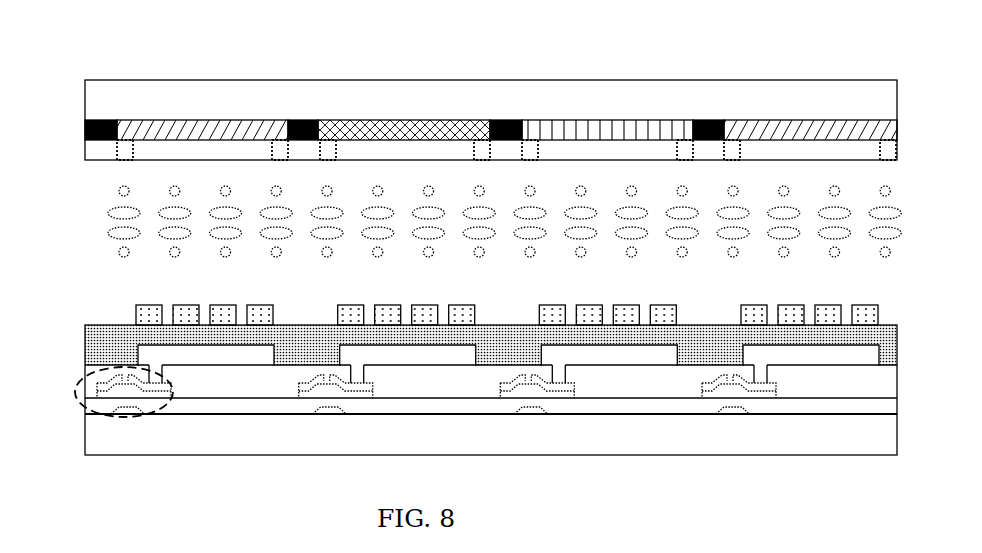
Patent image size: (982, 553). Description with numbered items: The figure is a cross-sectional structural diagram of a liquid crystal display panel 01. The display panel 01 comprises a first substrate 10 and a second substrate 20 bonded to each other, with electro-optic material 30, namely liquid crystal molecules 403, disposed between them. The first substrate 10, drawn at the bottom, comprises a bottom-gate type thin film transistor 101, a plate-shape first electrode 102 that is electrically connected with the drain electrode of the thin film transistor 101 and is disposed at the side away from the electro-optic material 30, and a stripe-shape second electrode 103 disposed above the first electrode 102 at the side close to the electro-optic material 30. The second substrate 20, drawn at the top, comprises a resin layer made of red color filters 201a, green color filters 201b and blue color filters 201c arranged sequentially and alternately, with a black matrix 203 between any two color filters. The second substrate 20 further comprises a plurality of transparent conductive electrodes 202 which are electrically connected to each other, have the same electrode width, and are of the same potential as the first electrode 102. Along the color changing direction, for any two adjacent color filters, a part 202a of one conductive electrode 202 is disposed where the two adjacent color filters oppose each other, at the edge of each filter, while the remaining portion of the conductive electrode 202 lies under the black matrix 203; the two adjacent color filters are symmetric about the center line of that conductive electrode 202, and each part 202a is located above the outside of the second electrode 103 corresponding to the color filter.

The display panel 01 is at (433, 52).
The second substrate 20 is at (73, 82).
The transparent conductive electrode 202 is at (82, 168).
The black matrix 203 is at (710, 120).
The red color filter 201a is at (457, 127).
The green color filter 201b is at (650, 130).
The blue color filter 201c is at (840, 127).
The part of the conductive electrode 202a is at (327, 147).
The electro-optic material 30 is at (472, 221).
The liquid crystal molecules 403 is at (102, 255).
The first substrate 10 is at (68, 305).
The thin film transistor 101 is at (128, 418).
The first electrode 102 is at (225, 350).
The second electrode 103 is at (272, 303).